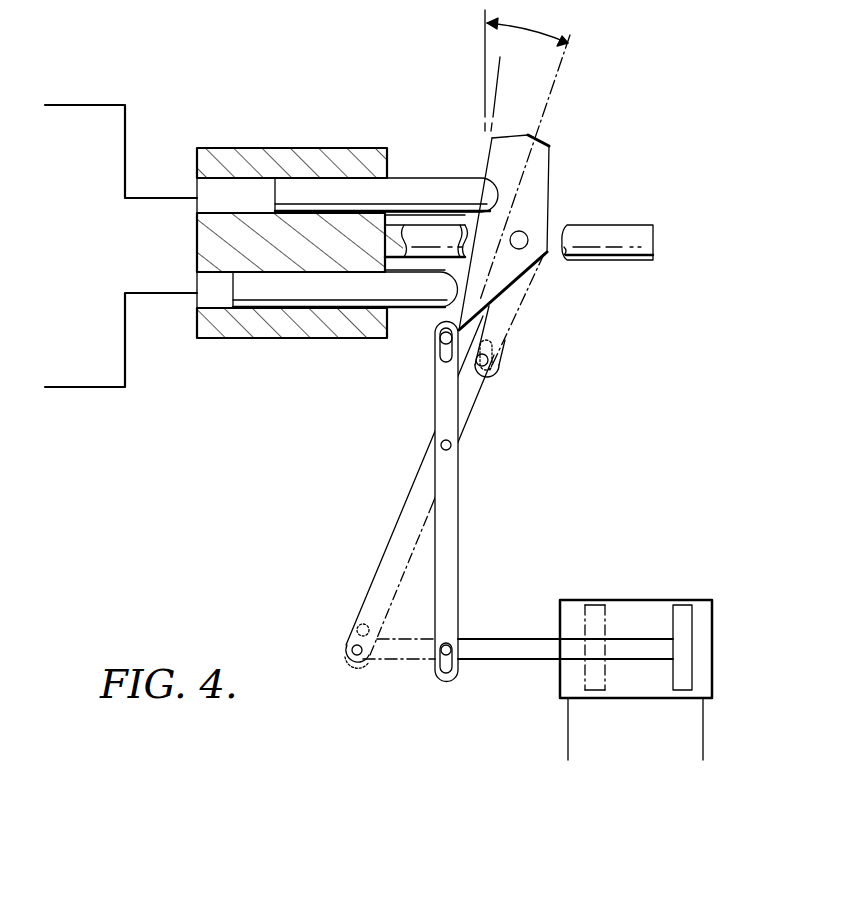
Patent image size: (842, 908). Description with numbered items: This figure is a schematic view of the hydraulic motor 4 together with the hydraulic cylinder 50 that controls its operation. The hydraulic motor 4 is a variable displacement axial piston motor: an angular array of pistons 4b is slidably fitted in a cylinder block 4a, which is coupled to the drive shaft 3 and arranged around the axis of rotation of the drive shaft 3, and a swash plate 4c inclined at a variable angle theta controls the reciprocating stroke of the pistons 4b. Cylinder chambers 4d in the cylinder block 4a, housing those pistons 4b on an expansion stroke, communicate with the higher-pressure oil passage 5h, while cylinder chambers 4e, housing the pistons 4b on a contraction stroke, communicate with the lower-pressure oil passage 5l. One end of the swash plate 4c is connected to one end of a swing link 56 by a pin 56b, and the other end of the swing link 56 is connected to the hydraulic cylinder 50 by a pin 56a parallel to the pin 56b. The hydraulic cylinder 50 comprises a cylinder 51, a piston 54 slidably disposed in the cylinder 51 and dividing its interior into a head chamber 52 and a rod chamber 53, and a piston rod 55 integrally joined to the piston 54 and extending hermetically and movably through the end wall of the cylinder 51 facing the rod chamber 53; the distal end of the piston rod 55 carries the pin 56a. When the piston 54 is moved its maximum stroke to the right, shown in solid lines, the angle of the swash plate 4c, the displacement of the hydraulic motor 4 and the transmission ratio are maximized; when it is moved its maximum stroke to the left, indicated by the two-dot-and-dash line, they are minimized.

The drive shaft 3 is at (628, 262).
The hydraulic motor 4 is at (338, 142).
The cylinder block 4a is at (296, 338).
The pistons 4b is at (440, 178).
The swash plate 4c is at (547, 187).
The cylinder chambers 4d is at (197, 302).
The cylinder chambers 4e is at (198, 192).
The lower-pressure oil passage 5l is at (88, 103).
The higher-pressure oil passage 5h is at (99, 388).
The hydraulic cylinder 50 is at (663, 643).
The cylinder 51 is at (612, 598).
The head chamber 52 is at (702, 658).
The rod chamber 53 is at (635, 687).
The piston 54 is at (685, 620).
The piston rod 55 is at (514, 645).
The swing link 56 is at (459, 548).
The pin 56a is at (446, 650).
The pin 56b is at (440, 342).